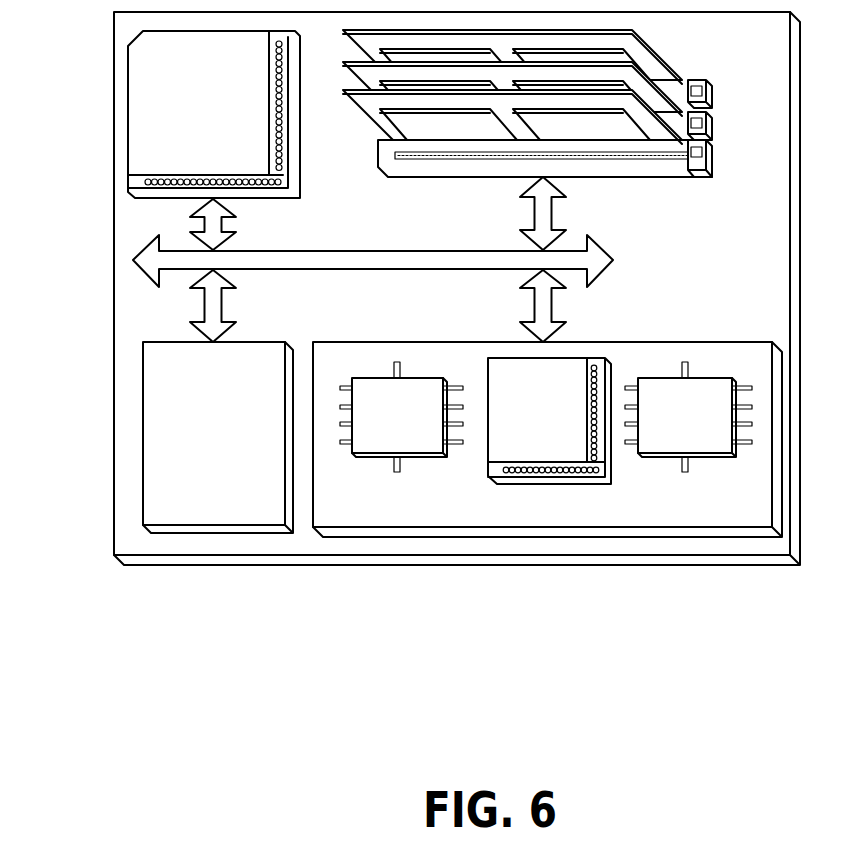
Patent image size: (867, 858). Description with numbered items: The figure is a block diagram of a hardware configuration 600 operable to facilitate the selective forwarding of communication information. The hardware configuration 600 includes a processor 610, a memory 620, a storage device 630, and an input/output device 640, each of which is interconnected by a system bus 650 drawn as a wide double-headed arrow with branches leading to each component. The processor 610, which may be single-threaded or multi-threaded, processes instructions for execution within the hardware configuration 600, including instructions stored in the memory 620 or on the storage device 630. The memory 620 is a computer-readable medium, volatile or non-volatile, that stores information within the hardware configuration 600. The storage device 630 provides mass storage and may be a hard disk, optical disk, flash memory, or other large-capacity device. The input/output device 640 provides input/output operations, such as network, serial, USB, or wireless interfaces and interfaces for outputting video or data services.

The hardware configuration 600 is at (95, 672).
The processor 610 is at (258, 164).
The memory 620 is at (687, 80).
The storage device 630 is at (272, 519).
The input/output device 640 is at (740, 342).
The system bus 650 is at (370, 270).